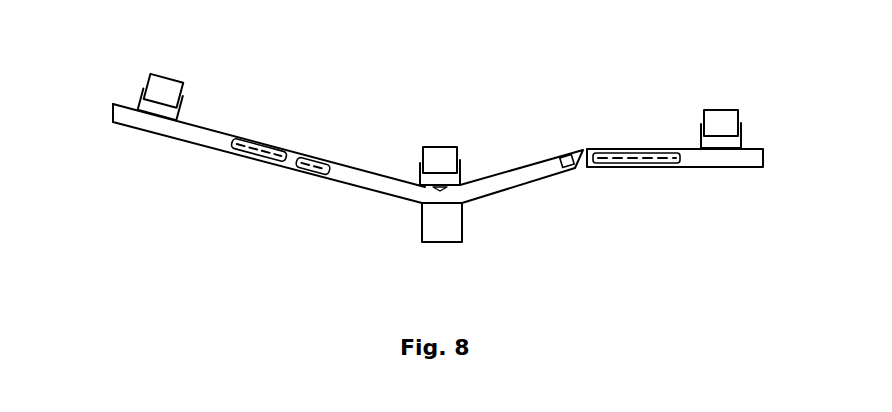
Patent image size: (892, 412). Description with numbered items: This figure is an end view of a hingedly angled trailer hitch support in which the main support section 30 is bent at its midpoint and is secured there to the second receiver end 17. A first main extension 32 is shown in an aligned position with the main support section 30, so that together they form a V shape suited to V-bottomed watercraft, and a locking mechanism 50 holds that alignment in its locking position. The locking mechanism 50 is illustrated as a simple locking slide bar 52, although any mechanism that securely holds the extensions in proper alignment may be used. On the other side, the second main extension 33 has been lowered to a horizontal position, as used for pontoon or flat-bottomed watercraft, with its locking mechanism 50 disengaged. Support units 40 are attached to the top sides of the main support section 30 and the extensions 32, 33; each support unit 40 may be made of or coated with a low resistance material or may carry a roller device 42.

The second receiver end 17 is at (442, 225).
The main support section 30 is at (347, 184).
The first main extension 32 is at (182, 130).
The second main extension 33 is at (708, 160).
The support unit 40 is at (128, 83).
The roller device 42 is at (718, 108).
The locking mechanism 50 is at (282, 142).
The locking slide bar 52 is at (663, 160).